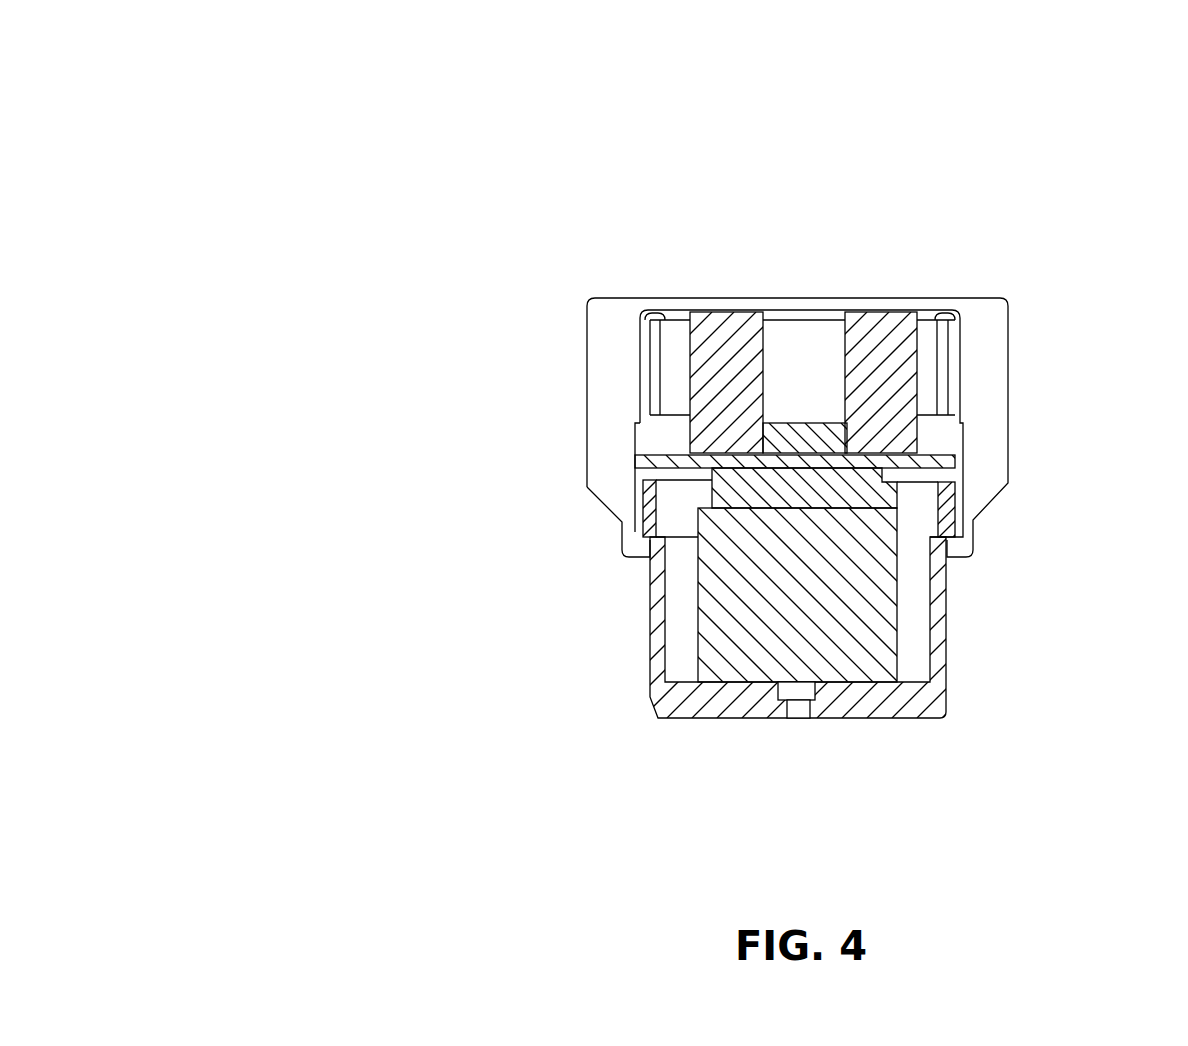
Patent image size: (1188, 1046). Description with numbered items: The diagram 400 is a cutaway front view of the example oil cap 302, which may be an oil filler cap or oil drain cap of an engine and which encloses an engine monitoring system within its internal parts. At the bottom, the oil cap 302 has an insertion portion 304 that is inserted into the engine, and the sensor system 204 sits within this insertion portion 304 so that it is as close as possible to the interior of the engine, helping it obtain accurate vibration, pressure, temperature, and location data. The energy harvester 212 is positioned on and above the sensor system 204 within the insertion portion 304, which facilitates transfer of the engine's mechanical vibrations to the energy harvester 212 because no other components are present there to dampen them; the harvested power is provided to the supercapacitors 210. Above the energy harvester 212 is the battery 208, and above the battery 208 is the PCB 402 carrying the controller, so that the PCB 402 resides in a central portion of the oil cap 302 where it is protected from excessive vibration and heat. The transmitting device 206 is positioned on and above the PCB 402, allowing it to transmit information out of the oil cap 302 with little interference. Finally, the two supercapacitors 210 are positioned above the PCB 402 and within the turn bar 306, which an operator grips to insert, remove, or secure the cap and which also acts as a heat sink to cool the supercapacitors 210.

The diagram 400 is at (306, 68).
The oil cap 302 is at (588, 256).
The turn bar 306 is at (614, 362).
The supercapacitor 210 is at (872, 340).
The transmitting device 206 is at (812, 446).
The PCB 402 is at (643, 461).
The battery 208 is at (850, 492).
The energy harvester 212 is at (850, 607).
The insertion portion 304 is at (688, 702).
The sensor system 204 is at (787, 697).